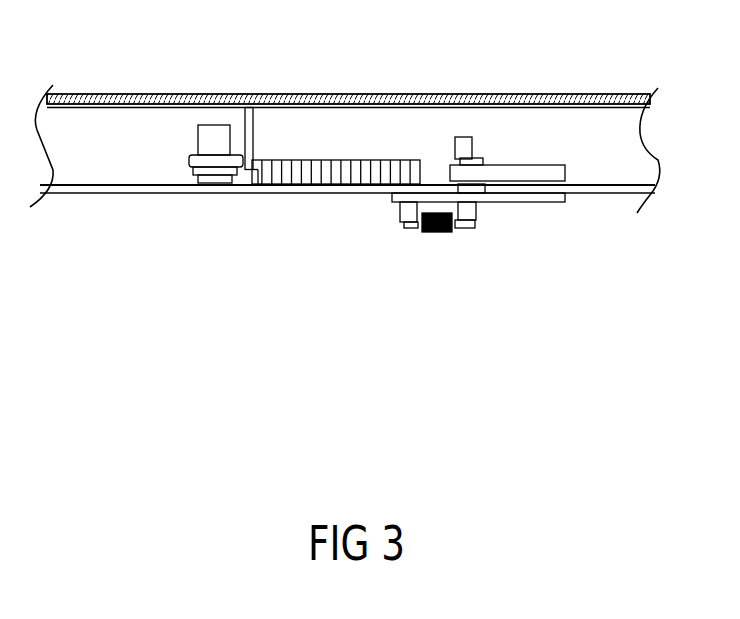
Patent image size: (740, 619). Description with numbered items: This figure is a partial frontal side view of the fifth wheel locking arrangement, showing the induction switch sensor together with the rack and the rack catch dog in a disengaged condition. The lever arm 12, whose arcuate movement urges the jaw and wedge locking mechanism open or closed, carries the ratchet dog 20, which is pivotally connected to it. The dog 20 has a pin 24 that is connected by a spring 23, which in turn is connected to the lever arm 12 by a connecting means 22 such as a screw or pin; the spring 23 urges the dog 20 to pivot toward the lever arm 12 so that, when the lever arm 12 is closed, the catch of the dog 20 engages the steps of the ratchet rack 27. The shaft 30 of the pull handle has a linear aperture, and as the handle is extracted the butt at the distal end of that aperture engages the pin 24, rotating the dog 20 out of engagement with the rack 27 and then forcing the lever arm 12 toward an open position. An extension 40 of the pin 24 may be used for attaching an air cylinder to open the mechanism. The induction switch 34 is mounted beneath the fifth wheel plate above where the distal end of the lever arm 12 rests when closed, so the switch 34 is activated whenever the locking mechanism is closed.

The lever arm 12 is at (558, 202).
The ratchet dog 20 is at (552, 165).
The connecting means 22 is at (402, 226).
The spring 23 is at (437, 232).
The pin 24 is at (462, 230).
The ratchet rack 27 is at (333, 160).
The shaft 30 is at (230, 194).
The induction switch 34 is at (222, 125).
The extension 40 is at (463, 137).